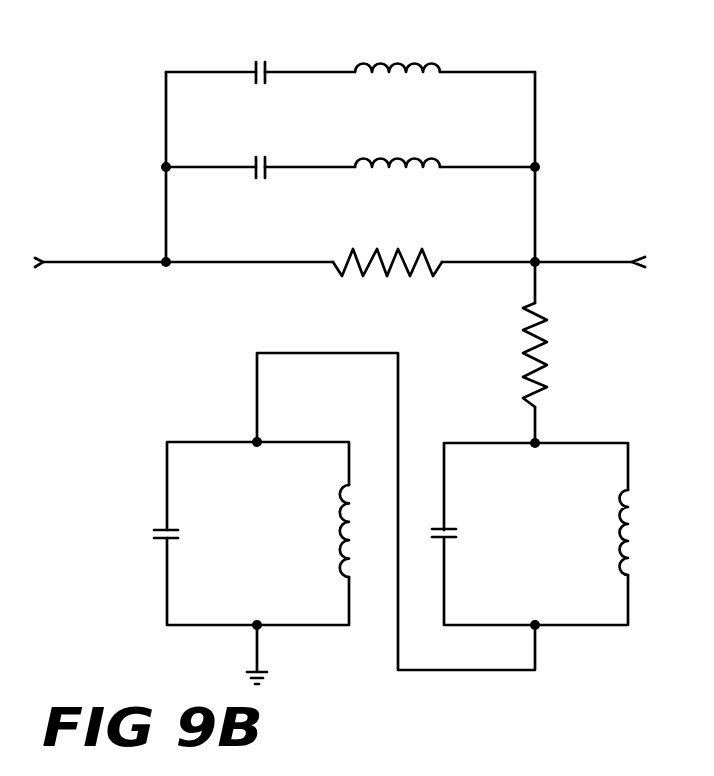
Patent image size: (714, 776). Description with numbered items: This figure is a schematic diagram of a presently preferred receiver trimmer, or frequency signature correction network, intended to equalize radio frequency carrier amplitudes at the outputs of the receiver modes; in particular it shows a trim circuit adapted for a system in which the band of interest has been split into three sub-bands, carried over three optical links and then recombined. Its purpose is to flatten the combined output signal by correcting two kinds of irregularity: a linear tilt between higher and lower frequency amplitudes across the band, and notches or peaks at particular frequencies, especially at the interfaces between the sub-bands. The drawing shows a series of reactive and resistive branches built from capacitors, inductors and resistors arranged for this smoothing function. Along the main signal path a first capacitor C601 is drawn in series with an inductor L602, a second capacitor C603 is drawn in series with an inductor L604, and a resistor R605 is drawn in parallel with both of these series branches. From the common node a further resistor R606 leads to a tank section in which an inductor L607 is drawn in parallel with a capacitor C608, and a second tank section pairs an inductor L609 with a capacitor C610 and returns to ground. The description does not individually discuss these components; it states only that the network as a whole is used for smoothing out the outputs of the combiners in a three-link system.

The capacitor C601 is at (256, 65).
The inductor L602 is at (412, 63).
The capacitor C603 is at (256, 160).
The inductor L604 is at (422, 158).
The resistor R605 is at (413, 254).
The resistor R606 is at (540, 337).
The inductor L607 is at (620, 533).
The capacitor C608 is at (453, 527).
The inductor L609 is at (342, 530).
The capacitor C610 is at (160, 528).